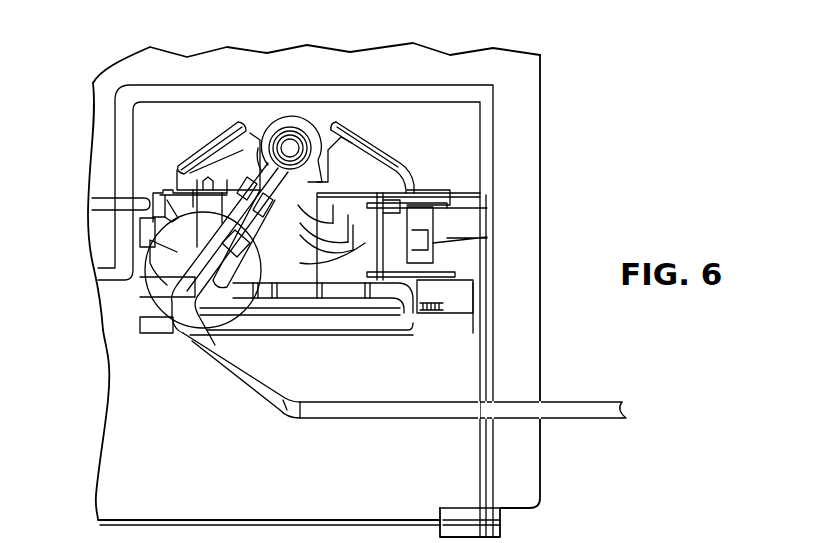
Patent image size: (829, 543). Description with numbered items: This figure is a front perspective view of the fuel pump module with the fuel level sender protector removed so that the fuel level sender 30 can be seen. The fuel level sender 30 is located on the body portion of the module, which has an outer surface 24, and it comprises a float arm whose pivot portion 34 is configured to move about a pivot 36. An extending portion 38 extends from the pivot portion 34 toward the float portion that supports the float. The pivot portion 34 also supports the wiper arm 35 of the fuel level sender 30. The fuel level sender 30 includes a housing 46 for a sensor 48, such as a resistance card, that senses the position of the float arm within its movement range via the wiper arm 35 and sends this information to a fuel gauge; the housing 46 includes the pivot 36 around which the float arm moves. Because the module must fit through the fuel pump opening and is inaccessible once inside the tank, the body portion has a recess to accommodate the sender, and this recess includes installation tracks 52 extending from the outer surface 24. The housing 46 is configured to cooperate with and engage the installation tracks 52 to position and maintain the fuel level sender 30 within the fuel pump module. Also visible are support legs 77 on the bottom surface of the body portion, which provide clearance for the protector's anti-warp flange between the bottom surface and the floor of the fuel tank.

The outer surface 24 is at (192, 463).
The fuel level sender 30 is at (385, 140).
The pivot portion 34 is at (180, 218).
The wiper arm 35 is at (173, 330).
The pivot 36 is at (288, 140).
The extending portion 38 is at (577, 413).
The housing 46 is at (398, 162).
The sensor 48 is at (298, 258).
The installation tracks 52 is at (468, 220).
The support legs 77 is at (497, 530).